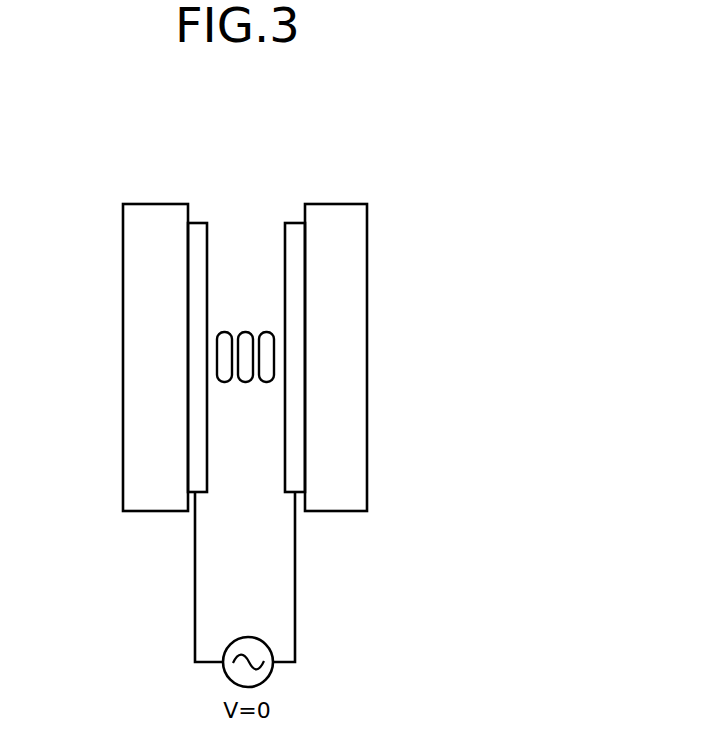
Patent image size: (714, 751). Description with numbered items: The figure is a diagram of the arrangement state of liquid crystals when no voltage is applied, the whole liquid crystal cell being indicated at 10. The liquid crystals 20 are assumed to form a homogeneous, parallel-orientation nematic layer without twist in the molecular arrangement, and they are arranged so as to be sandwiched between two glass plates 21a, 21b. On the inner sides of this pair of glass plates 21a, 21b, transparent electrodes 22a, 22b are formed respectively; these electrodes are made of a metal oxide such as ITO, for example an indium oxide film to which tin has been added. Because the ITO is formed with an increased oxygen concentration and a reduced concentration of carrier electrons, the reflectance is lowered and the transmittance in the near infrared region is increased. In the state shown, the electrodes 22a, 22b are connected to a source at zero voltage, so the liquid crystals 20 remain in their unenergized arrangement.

The ion generator / discharge unit 10 is at (410, 181).
The liquid crystals 20 is at (252, 331).
The glass plate 21a is at (140, 313).
The glass plate 21b is at (352, 316).
The transparent electrode 22a is at (197, 222).
The transparent electrode 22b is at (293, 222).